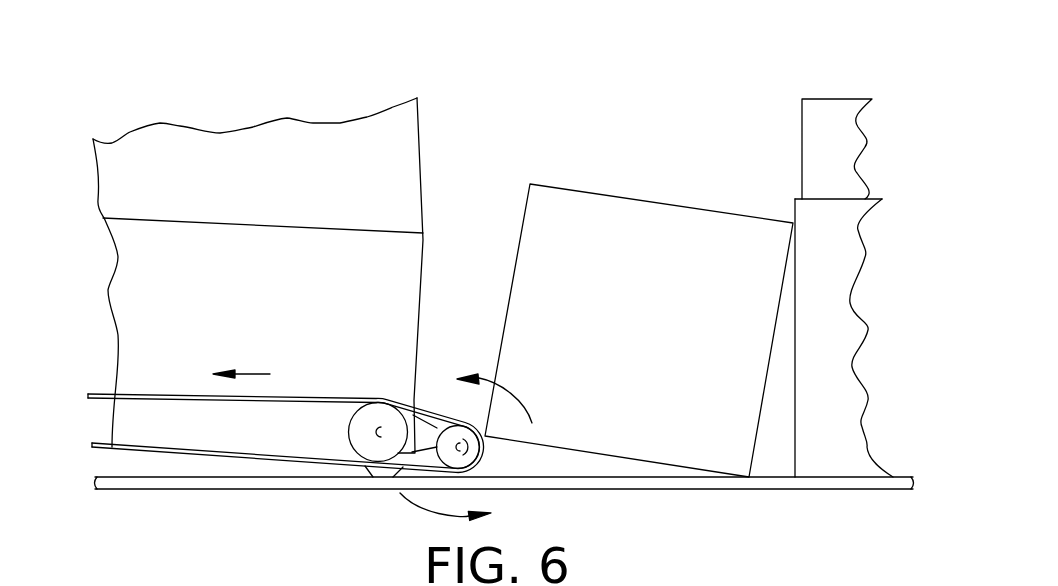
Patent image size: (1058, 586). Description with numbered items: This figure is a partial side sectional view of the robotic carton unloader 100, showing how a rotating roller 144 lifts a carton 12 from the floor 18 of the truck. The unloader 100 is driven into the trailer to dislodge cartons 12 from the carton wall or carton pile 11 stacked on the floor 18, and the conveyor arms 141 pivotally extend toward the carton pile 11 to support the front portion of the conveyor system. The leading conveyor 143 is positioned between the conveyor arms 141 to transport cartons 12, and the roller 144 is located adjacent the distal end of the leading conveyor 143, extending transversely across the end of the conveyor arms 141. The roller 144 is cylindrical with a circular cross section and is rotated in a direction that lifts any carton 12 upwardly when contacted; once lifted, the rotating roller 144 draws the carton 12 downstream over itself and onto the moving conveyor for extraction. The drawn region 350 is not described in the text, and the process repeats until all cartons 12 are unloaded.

The robotic carton unloader 100 is at (552, 83).
The carton wall or carton pile 11 is at (824, 85).
The carton 12 is at (613, 235).
The floor 18 is at (770, 477).
The conveyor arms 141 is at (430, 433).
The leading conveyor 143 is at (283, 423).
The roller 144 is at (487, 455).
The stack of packages 350 is at (160, 345).